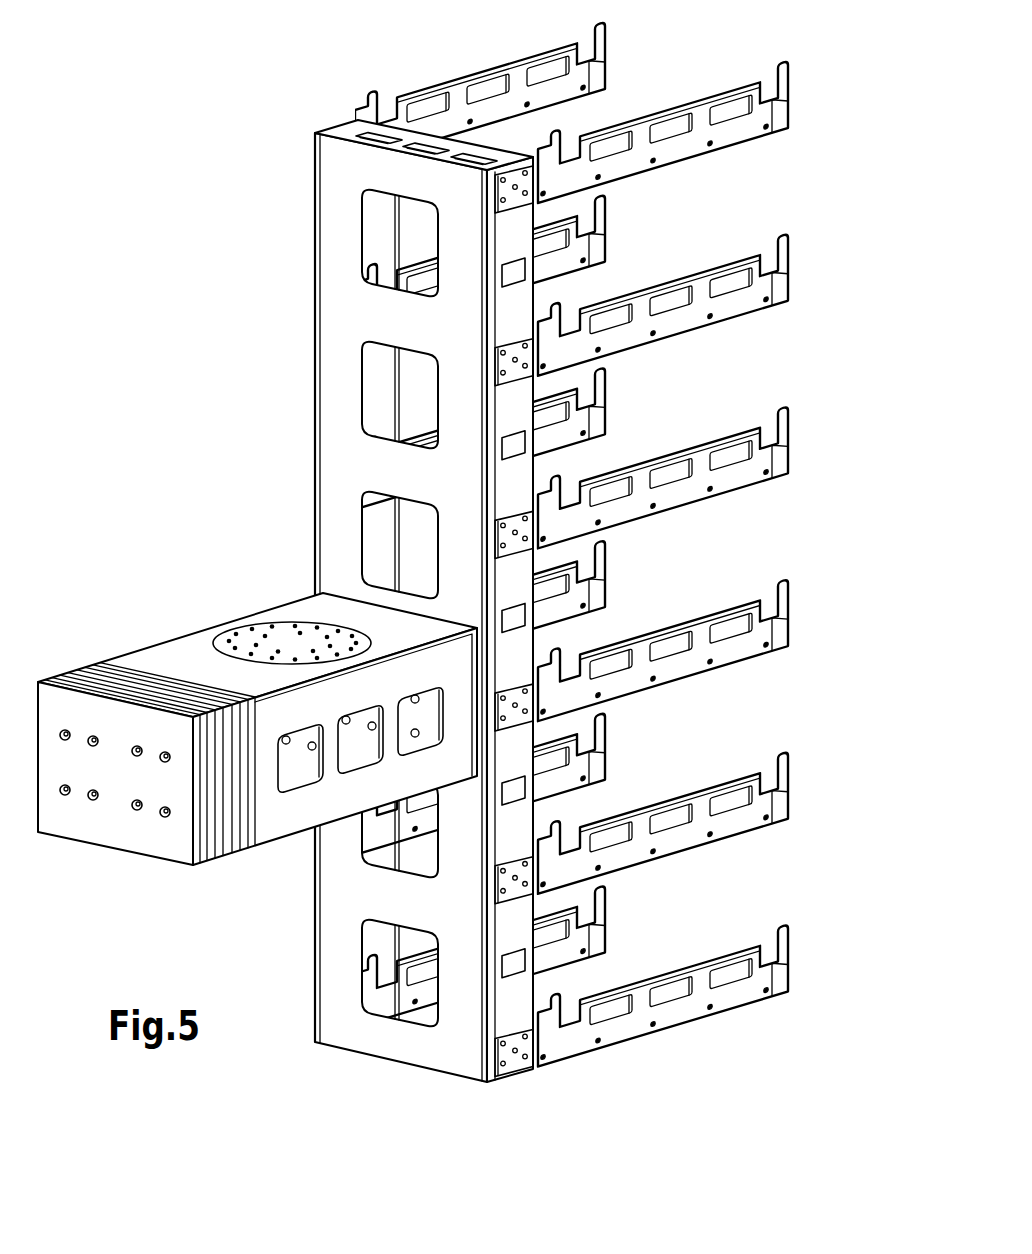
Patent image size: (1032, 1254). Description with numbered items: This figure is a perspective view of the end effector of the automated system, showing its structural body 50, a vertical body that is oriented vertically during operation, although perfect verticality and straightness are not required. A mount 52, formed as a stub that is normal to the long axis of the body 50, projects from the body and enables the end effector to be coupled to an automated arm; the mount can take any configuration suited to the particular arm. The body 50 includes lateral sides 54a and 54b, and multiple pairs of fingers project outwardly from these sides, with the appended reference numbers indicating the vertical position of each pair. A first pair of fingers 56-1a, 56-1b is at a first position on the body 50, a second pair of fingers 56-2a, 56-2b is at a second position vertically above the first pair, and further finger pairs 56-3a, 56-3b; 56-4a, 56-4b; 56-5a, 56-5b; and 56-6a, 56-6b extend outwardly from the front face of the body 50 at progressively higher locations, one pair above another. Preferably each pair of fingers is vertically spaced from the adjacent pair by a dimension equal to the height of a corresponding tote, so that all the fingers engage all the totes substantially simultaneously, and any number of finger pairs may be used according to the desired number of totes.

The structural body 50 is at (357, 167).
The mount 52 is at (192, 662).
The lateral side 54a is at (312, 297).
The lateral side 54b is at (518, 1000).
The finger 56-1a is at (590, 938).
The finger 56-1b is at (750, 1000).
The finger 56-2a is at (592, 768).
The finger 56-2b is at (750, 827).
The finger 56-3a is at (592, 595).
The finger 56-3b is at (750, 654).
The finger 56-4a is at (592, 422).
The finger 56-4b is at (750, 481).
The finger 56-5a is at (592, 250).
The finger 56-5b is at (750, 309).
The finger 56-6a is at (592, 77).
The finger 56-6b is at (750, 136).